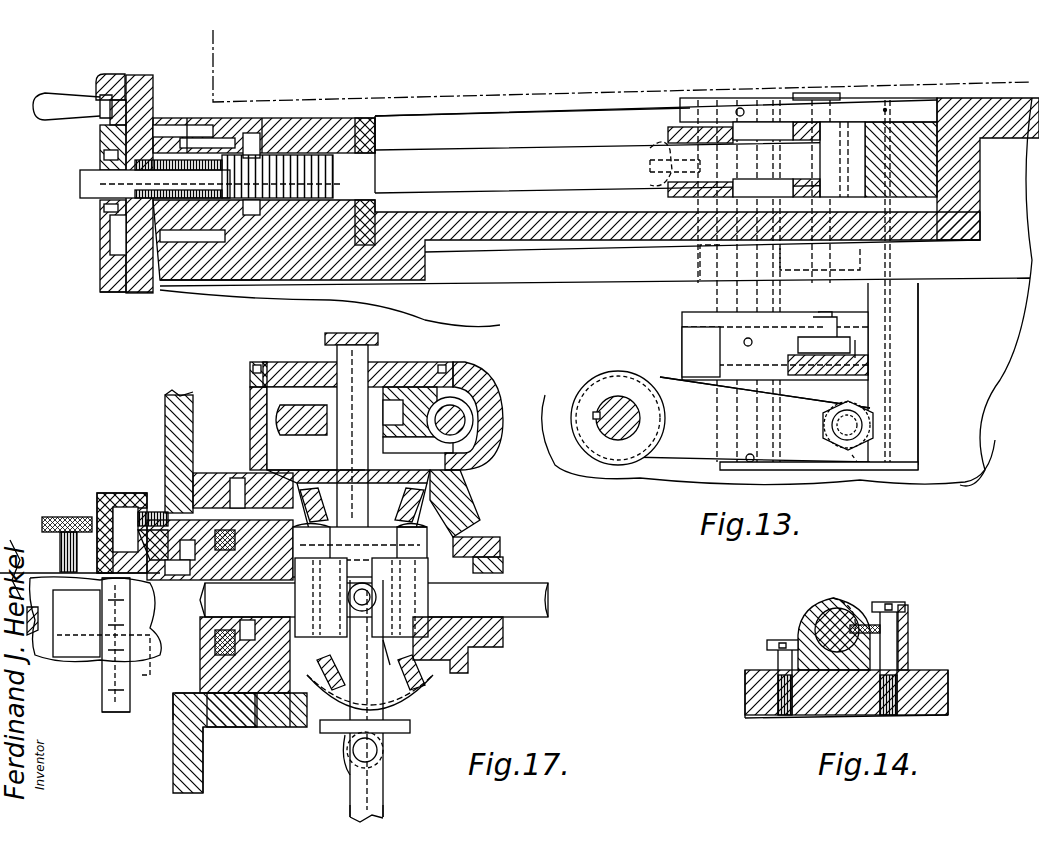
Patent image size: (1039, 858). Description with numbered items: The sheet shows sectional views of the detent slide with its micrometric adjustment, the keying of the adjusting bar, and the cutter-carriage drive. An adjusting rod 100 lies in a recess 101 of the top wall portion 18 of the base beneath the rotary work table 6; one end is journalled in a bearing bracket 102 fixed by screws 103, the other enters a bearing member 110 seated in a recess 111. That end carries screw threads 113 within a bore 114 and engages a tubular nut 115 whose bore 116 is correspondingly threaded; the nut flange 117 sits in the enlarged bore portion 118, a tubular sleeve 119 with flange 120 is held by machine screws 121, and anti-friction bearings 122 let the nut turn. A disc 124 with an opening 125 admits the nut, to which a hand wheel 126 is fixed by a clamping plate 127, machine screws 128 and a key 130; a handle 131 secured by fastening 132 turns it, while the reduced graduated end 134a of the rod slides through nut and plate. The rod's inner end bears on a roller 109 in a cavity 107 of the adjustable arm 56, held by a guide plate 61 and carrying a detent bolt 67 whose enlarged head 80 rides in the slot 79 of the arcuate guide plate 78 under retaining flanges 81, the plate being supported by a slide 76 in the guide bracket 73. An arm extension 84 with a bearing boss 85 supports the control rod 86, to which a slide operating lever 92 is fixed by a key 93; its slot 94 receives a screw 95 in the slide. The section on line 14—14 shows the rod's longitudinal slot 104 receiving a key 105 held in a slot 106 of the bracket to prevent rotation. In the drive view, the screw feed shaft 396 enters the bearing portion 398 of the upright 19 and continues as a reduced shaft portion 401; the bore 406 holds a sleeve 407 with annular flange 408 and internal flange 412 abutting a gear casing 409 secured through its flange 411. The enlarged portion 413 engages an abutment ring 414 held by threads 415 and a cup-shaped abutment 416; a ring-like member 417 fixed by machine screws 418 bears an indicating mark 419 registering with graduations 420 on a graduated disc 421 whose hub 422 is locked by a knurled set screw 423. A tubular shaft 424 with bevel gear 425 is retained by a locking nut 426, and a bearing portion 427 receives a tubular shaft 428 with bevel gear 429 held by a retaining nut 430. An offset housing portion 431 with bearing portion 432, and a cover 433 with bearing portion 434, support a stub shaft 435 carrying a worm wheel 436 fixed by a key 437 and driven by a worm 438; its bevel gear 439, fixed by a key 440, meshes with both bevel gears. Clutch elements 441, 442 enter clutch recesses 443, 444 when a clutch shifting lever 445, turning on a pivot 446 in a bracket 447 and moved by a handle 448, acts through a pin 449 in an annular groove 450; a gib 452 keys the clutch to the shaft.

In FIG. 13, the rotary work table or support 6 is at (485, 92).
In FIG. 13, the section line 14— 14 is at (690, 83).
In FIG. 13, the central portion of the base top wall 18 is at (1005, 95).
In FIG. 17, the upright 19 is at (180, 788).
In FIG. 13, the adjustable arm member 56 is at (940, 164).
In FIG. 13, the guide plate 61 is at (885, 110).
In FIG. 13, the detent pin or bolt 67 is at (828, 92).
In FIG. 13, the guide bracket 73 is at (920, 360).
In FIG. 13, the slide 76 is at (857, 388).
In FIG. 13, the arcuately curved guide plate 78 is at (690, 335).
In FIG. 13, the slot 79 is at (862, 352).
In FIG. 13, the enlarged head 80 is at (847, 343).
In FIG. 13, the retaining flanges 81 is at (697, 315).
In FIG. 13, the arm extension 84 is at (650, 375).
In FIG. 13, the lever hub 85 is at (585, 388).
In FIG. 13, the control rod 86 is at (618, 437).
In FIG. 13, the slide operating lever 92 is at (683, 443).
In FIG. 13, the key 93 is at (598, 420).
In FIG. 13, the elongated slot or opening 94 is at (862, 470).
In FIG. 13, the screw 95 is at (855, 427).
In FIG. 13, the adjusting rod 100 is at (580, 150).
In FIG. 14, the adjusting rod 100 is at (815, 616).
In FIG. 13, the recess 101 is at (520, 208).
In FIG. 14, the recess 101 is at (928, 668).
In FIG. 13, the bearing bracket 102 is at (668, 125).
In FIG. 14, the bearing bracket 102 is at (810, 600).
In FIG. 13, the screws 103 is at (658, 143).
In FIG. 14, the screws 103 is at (788, 640).
In FIG. 13, the longitudinal slot 104 is at (655, 183).
In FIG. 14, the longitudinal slot 104 is at (840, 595).
In FIG. 14, the key 105 is at (866, 620).
In FIG. 14, the slot 106 is at (905, 612).
In FIG. 13, the cavity 107 is at (808, 98).
In FIG. 13, the roller or pin 109 is at (778, 125).
In FIG. 13, the bearing member 110 is at (340, 117).
In FIG. 13, the recess 111 is at (372, 272).
In FIG. 13, the screw threads 113 is at (305, 160).
In FIG. 13, the bore 114 is at (368, 117).
In FIG. 13, the tubular nut 115 is at (190, 117).
In FIG. 13, the bore 116 is at (214, 250).
In FIG. 13, the flange 117 is at (245, 132).
In FIG. 13, the enlarged portion of the bore 118 is at (258, 118).
In FIG. 13, the tubular sleeve 119 is at (200, 248).
In FIG. 13, the flange 120 is at (162, 117).
In FIG. 13, the machine screws 121 is at (175, 284).
In FIG. 13, the anti-friction bearings 122 is at (210, 110).
In FIG. 13, the disc 124 is at (145, 75).
In FIG. 13, the opening 125 is at (130, 262).
In FIG. 13, the hand wheel 126 is at (110, 292).
In FIG. 13, the clamping plate 127 is at (105, 153).
In FIG. 13, the machine screws 128 is at (105, 210).
In FIG. 13, the key 130 is at (110, 135).
In FIG. 13, the handle 131 is at (45, 101).
In FIG. 13, the handle fastening 132 is at (100, 92).
In FIG. 13, the reduced graduated end 134a is at (95, 182).
In FIG. 17, the screw feed shaft 396 is at (45, 573).
In FIG. 17, the bearing portion 398 is at (226, 710).
In FIG. 17, the reduced shaft portion 401 is at (374, 600).
In FIG. 17, the bore 406 is at (207, 693).
In FIG. 17, the sleeve 407 is at (218, 475).
In FIG. 17, the annular flange 408 is at (236, 470).
In FIG. 17, the gear casing 409 is at (440, 505).
In FIG. 17, the flange 411 is at (300, 727).
In FIG. 17, the internal flange 412 is at (220, 550).
In FIG. 17, the annular enlarged portion 413 is at (115, 670).
In FIG. 17, the abutment ring 414 is at (162, 510).
In FIG. 17, the threads 415 is at (175, 710).
In FIG. 17, the cup-shaped abutment 416 is at (197, 700).
In FIG. 17, the ring-like member 417 is at (125, 495).
In FIG. 17, the machine screws 418 is at (118, 495).
In FIG. 17, the indicating mark 419 is at (134, 602).
In FIG. 17, the graduations 420 is at (112, 623).
In FIG. 17, the graduated disc 421 is at (102, 700).
In FIG. 17, the hub 422 is at (73, 650).
In FIG. 17, the knurled set screw 423 is at (58, 517).
In FIG. 17, the tubular shaft 424 is at (255, 730).
In FIG. 17, the bevel gear 425 is at (322, 735).
In FIG. 17, the locking nut 426 is at (215, 730).
In FIG. 17, the bearing portion 427 is at (465, 673).
In FIG. 17, the tubular shaft 428 is at (500, 563).
In FIG. 17, the bevel gear 429 is at (445, 690).
In FIG. 17, the retaining nut 430 is at (500, 545).
In FIG. 17, the offset housing portion 431 is at (490, 385).
In FIG. 17, the bearing portion 432 is at (395, 445).
In FIG. 17, the cover 433 is at (423, 362).
In FIG. 17, the bearing portion 434 is at (330, 342).
In FIG. 17, the stub shaft 435 is at (352, 437).
In FIG. 17, the worm wheel 436 is at (413, 420).
In FIG. 17, the key 437 is at (325, 400).
In FIG. 17, the worm 438 is at (472, 410).
In FIG. 17, the bevel gear 439 is at (420, 500).
In FIG. 17, the key 440 is at (350, 510).
In FIG. 17, the clutch element 441 is at (328, 665).
In FIG. 17, the clutch element 442 is at (394, 652).
In FIG. 17, the clutch recess 443 is at (320, 590).
In FIG. 17, the clutch recess 444 is at (420, 612).
In FIG. 17, the clutch shifting lever 445 is at (366, 701).
In FIG. 17, the pivot 446 is at (378, 752).
In FIG. 17, the bracket 447 is at (375, 780).
In FIG. 17, the handle 448 is at (350, 808).
In FIG. 17, the pin 449 is at (378, 597).
In FIG. 17, the annular groove 450 is at (370, 575).
In FIG. 17, the key or gib 452 is at (338, 575).